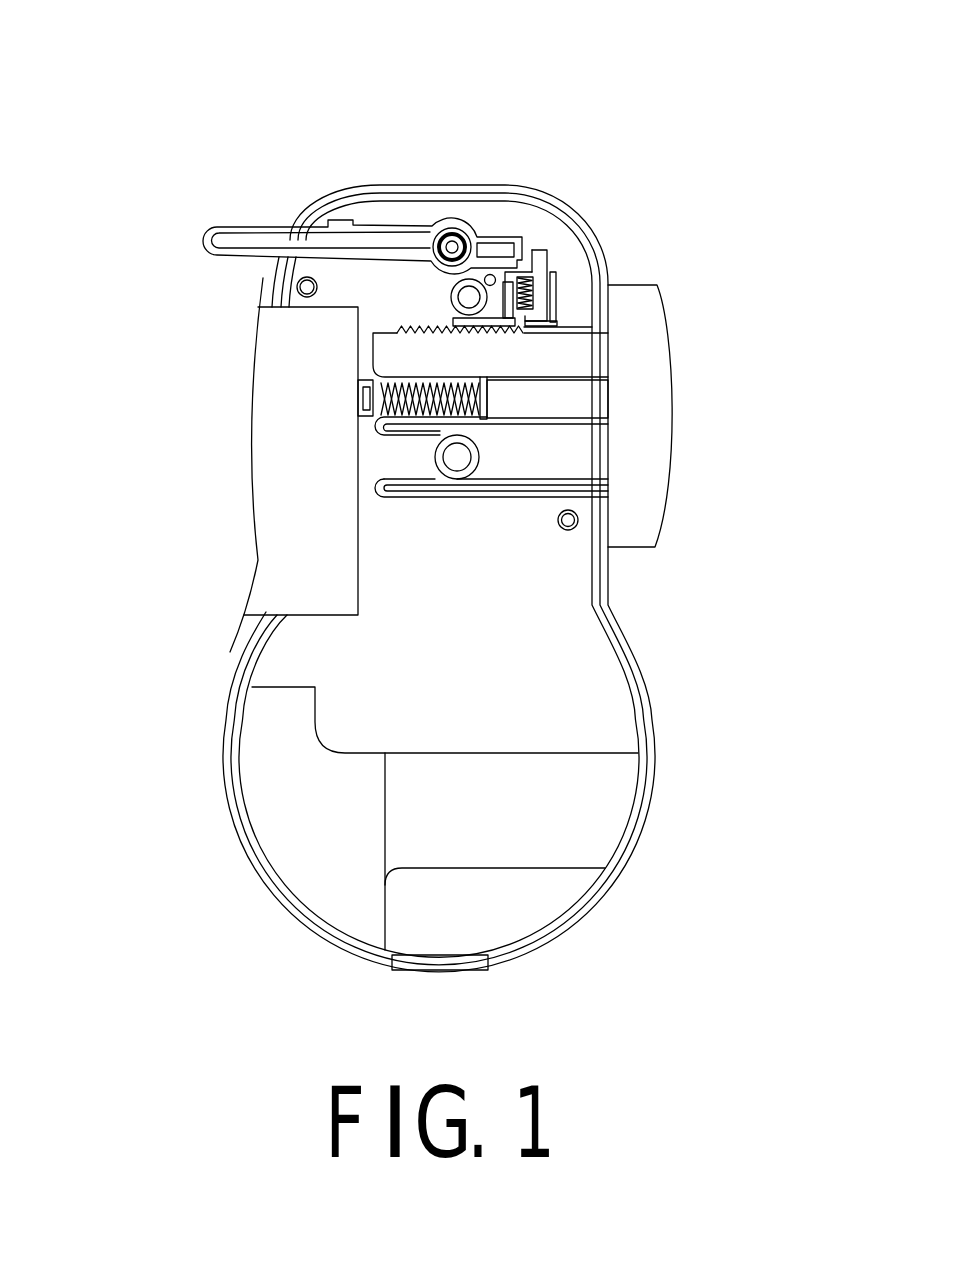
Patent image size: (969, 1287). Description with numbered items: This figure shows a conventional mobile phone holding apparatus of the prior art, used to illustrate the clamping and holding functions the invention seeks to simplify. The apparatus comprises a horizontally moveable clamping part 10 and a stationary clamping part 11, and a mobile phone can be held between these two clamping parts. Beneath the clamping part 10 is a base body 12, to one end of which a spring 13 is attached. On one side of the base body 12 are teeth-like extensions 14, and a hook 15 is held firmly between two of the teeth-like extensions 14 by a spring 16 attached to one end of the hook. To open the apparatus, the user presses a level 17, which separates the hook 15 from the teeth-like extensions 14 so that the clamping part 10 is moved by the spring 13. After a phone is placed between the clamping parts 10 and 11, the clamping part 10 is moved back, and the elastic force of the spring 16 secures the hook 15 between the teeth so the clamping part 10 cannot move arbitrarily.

The horizontally moveable clamping part 10 is at (635, 450).
The stationary clamping part 11 is at (307, 466).
The base body 12 is at (540, 357).
The spring 13 is at (383, 390).
The teeth-like extensions 14 is at (430, 328).
The hook 15 is at (525, 316).
The spring 16 is at (526, 273).
The level 17 is at (242, 228).